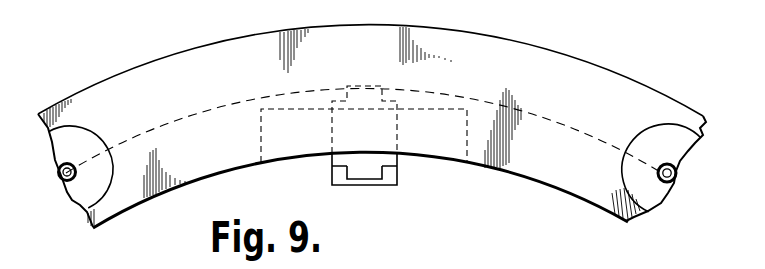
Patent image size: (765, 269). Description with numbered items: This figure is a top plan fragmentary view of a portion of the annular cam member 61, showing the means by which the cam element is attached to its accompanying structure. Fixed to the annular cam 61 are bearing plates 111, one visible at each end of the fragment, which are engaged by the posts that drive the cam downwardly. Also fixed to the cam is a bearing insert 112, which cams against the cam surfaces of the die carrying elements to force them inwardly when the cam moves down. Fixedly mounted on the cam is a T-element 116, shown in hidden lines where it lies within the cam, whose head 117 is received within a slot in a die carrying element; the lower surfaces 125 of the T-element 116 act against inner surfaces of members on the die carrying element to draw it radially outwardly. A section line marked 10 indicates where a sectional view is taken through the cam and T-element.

The annular cam member 61 is at (183, 99).
The bearing plates 111 is at (77, 140).
The bearing inserts 112 is at (410, 163).
The T-elements 116 is at (345, 195).
The heads 117 is at (373, 181).
The lower surfaces 125 is at (338, 171).
The section line 10 is at (484, 15).